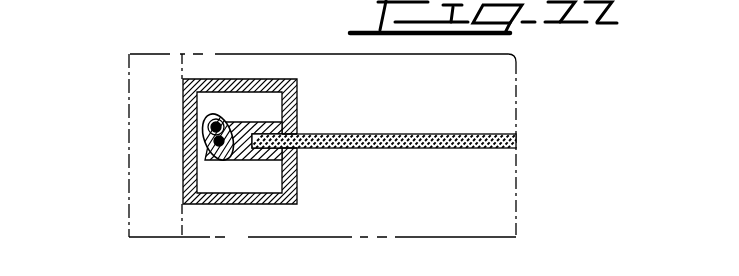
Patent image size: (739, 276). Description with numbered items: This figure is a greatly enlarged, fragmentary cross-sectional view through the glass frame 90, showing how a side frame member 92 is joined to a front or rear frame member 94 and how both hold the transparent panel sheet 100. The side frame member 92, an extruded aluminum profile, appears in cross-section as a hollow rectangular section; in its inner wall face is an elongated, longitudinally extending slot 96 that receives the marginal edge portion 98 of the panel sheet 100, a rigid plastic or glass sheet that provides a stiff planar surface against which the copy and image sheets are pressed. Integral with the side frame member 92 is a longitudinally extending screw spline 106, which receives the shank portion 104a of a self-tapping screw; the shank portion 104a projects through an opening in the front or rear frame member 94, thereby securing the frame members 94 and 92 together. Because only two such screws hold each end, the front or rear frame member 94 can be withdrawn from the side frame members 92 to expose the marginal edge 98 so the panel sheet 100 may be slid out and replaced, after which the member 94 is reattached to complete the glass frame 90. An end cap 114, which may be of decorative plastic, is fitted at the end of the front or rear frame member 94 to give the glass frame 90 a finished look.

The glass frame 90 is at (120, 148).
The side frame member 92 is at (297, 108).
The front and rear frame member 94 is at (512, 240).
The slot 96 is at (284, 147).
The marginal edge portion 98 is at (256, 162).
The transparent panel sheet 100 is at (405, 133).
The shank portion 104a is at (230, 122).
The screw spline 106 is at (205, 120).
The end cap 114 is at (128, 219).